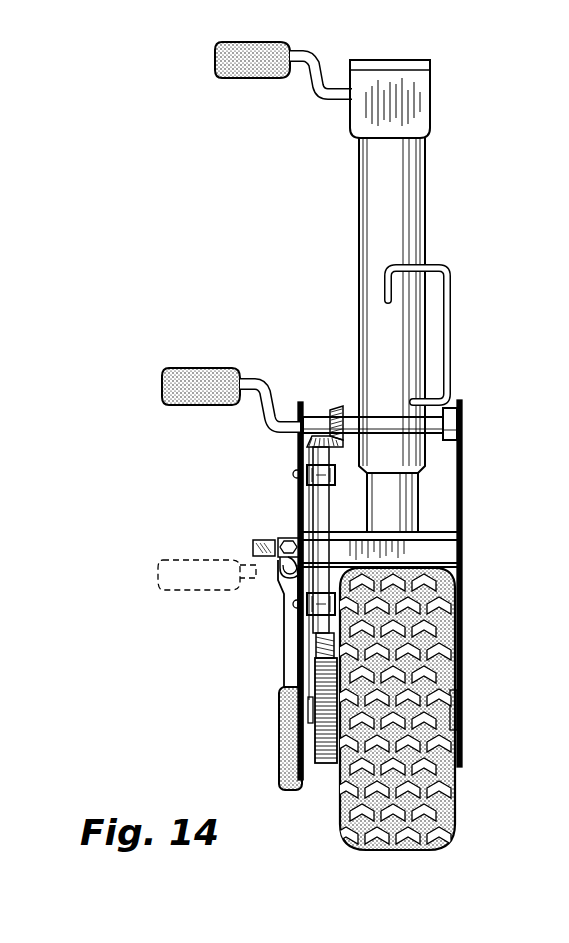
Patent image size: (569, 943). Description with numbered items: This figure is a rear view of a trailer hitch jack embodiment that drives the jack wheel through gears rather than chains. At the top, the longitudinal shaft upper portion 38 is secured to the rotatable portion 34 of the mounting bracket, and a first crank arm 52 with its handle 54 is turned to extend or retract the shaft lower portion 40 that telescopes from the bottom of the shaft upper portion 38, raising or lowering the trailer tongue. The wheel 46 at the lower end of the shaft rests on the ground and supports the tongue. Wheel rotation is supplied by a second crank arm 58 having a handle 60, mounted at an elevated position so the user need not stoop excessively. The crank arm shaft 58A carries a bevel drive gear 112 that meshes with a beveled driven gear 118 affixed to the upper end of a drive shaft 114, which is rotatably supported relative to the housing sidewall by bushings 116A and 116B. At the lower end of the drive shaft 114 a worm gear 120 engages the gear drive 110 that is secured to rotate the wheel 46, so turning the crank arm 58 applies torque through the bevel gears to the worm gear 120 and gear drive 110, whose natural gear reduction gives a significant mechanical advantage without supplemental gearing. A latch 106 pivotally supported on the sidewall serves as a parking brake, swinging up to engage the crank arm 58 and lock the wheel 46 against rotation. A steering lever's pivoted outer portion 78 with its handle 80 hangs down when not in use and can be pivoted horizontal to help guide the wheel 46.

The handle 54 is at (235, 67).
The first crank arm 52 is at (320, 93).
The shaft upper portion 38 is at (400, 210).
The rotatable portion 34 is at (448, 275).
The shaft lower portion 40 is at (403, 505).
The crank arm shaft 58A is at (390, 422).
The handle 60 is at (198, 380).
The second crank arm 58 is at (252, 380).
The bevel drive gear 112 is at (330, 410).
The beveled driven gear 118 is at (308, 441).
The drive shaft 114 is at (322, 505).
The bushing 116A is at (307, 478).
The bushing 116B is at (305, 606).
The latch 106 is at (255, 545).
The pivoted outer portion 78 is at (290, 640).
The handle 80 is at (285, 740).
The worm gear 120 is at (322, 655).
The gear drive 110 is at (327, 765).
The wheel 46 is at (448, 790).